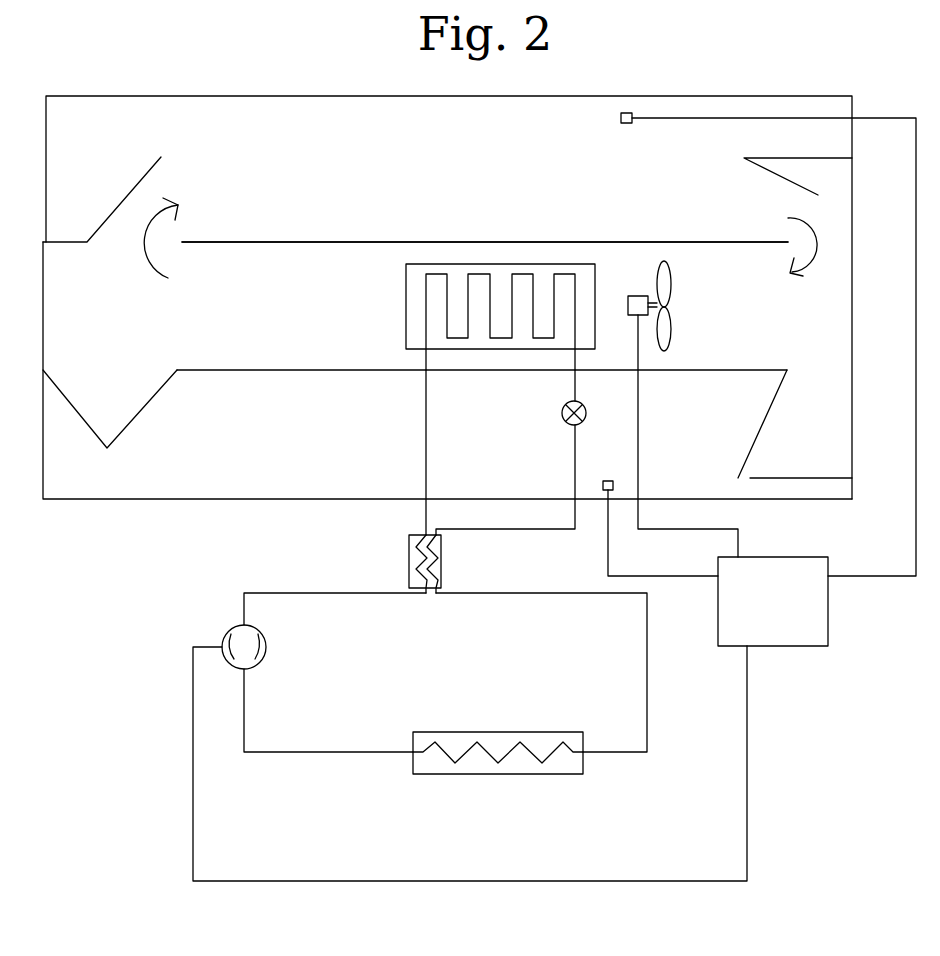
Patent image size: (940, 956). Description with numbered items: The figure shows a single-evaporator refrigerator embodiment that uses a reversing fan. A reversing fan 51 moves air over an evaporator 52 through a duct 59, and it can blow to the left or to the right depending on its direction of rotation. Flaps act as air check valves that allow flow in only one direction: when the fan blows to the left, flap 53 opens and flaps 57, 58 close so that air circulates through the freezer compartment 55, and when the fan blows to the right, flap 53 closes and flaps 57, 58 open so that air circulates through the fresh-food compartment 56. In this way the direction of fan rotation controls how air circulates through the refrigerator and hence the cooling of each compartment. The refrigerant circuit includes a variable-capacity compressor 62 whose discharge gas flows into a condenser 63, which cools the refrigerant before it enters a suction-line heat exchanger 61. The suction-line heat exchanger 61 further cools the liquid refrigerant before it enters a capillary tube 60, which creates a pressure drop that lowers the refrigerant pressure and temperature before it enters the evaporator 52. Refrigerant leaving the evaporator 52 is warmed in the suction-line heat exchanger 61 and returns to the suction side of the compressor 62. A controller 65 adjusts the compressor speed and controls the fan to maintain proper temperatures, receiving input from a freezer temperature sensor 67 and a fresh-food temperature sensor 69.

The reversing fan 51 is at (665, 328).
The evaporator 52 is at (425, 330).
The flap 53 is at (128, 192).
The freezer compartment 55 is at (449, 297).
The fresh-food compartment 56 is at (447, 370).
The flap 57 is at (87, 420).
The flap 58 is at (750, 455).
The duct 59 is at (272, 298).
The capillary tube 60 is at (580, 423).
The suction-line heat exchanger 61 is at (413, 562).
The variable-capacity compressor 62 is at (265, 658).
The condenser 63 is at (456, 731).
The controller 65 is at (510, 719).
The freezer temperature sensor 67 is at (750, 344).
The fresh-food temperature sensor 69 is at (660, 525).